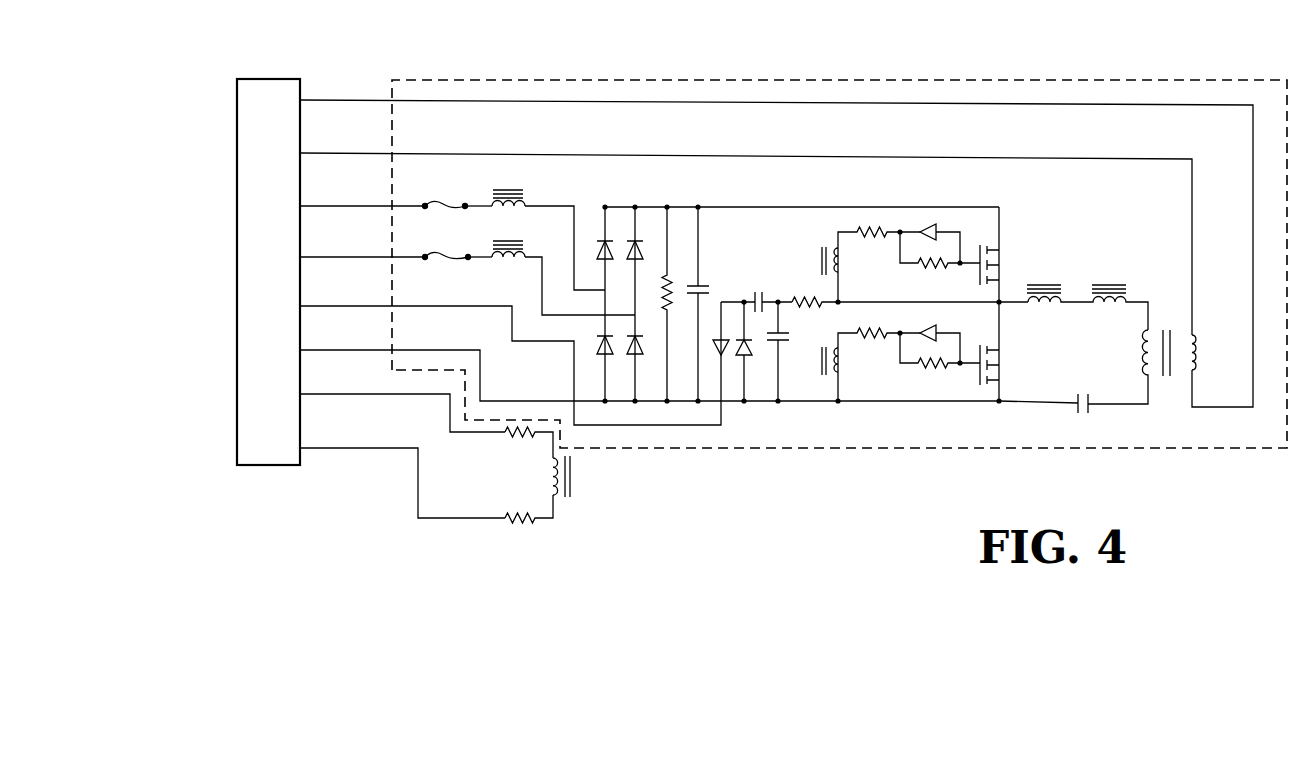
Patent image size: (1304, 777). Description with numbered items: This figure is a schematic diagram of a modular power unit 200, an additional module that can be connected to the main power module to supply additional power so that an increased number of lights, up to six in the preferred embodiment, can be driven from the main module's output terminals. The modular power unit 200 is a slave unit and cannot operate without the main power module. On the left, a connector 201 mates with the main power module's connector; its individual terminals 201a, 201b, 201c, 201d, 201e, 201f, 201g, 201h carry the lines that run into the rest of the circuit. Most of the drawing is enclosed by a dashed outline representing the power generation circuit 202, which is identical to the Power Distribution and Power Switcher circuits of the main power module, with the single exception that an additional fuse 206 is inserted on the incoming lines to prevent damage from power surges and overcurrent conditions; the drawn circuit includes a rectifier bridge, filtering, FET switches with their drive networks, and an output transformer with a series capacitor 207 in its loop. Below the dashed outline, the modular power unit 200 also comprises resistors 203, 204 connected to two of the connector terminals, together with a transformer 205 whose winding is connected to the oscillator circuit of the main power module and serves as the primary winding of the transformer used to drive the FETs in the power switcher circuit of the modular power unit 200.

The modular power unit 200 is at (1104, 56).
The connector 201 is at (272, 78).
The terminal 201a is at (748, 248).
The terminal 201b is at (717, 238).
The terminal 201c is at (424, 240).
The terminal 201d is at (439, 278).
The terminal 201e is at (482, 360).
The terminal 201f is at (424, 370).
The terminal 201g is at (374, 407).
The terminal 201h is at (374, 477).
The power generation circuit 202 is at (1073, 450).
The resistor 203 is at (511, 440).
The resistor 204 is at (515, 525).
The transformer 205 is at (573, 478).
The fuse 206 is at (465, 260).
The capacitor 207 is at (1092, 412).